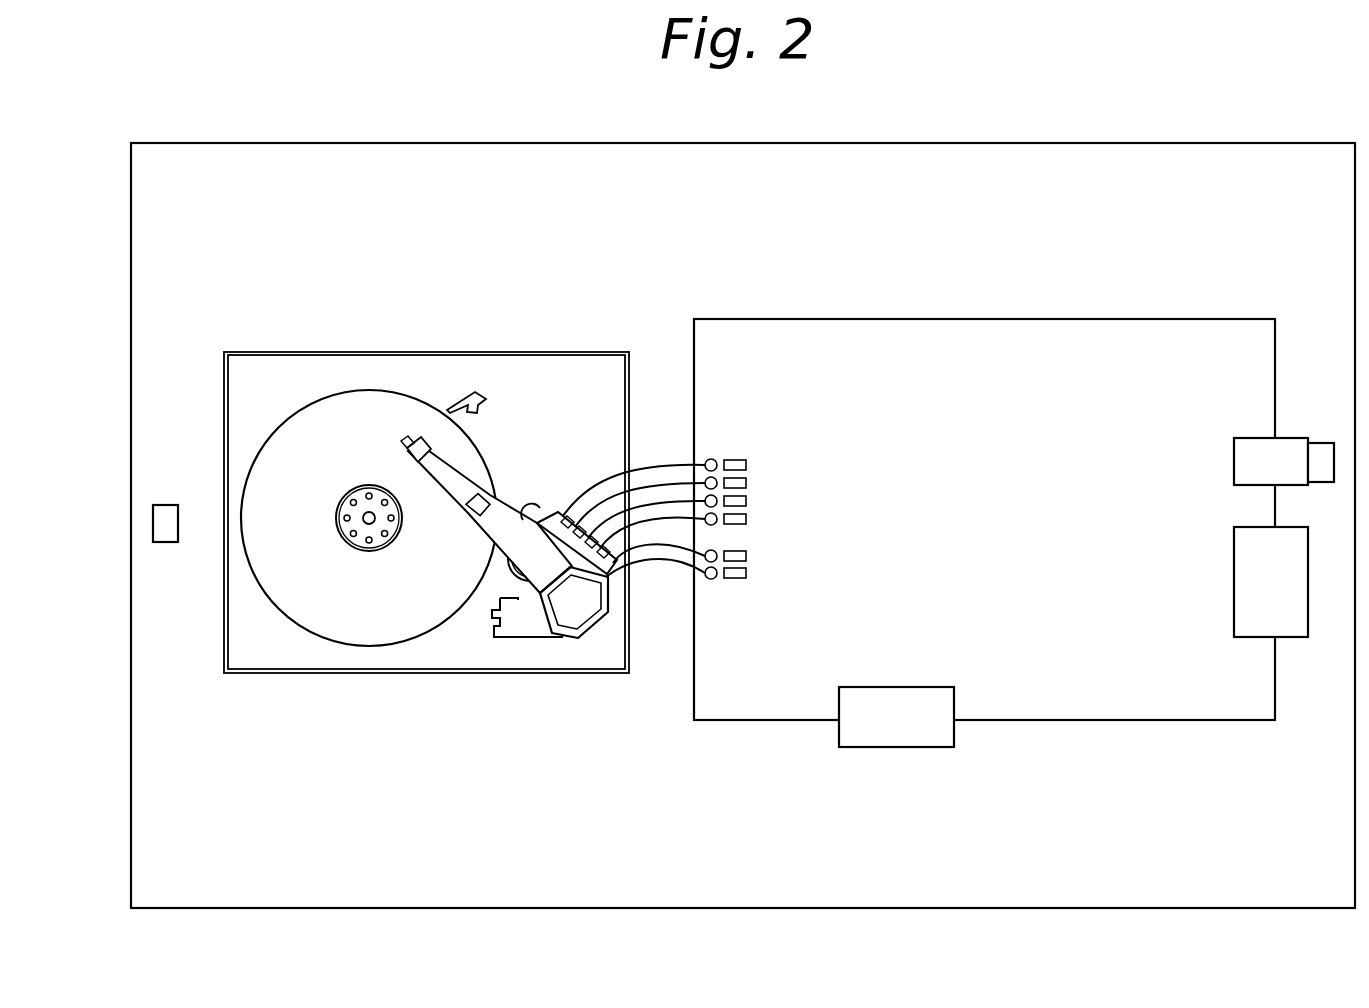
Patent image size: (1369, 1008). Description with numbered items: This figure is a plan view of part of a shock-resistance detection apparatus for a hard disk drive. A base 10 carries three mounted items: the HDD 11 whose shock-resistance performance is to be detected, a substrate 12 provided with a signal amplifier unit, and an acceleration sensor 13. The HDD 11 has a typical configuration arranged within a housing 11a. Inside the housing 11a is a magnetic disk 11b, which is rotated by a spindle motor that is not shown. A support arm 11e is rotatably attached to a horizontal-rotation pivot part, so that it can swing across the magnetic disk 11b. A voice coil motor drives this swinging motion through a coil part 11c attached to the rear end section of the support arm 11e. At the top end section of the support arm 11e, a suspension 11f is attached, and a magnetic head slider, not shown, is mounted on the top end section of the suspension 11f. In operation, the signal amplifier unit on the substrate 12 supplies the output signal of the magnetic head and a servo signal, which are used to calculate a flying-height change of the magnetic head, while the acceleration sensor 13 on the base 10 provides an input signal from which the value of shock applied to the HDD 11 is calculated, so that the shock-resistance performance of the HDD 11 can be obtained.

The base 10 is at (1160, 160).
The HDD 11 is at (548, 370).
The housing 11a is at (414, 352).
The magnetic disk 11b is at (320, 435).
The coil part 11c is at (585, 620).
The support arm 11e is at (500, 513).
The suspension 11f is at (450, 483).
The substrate with a signal amplifier unit 12 is at (1103, 320).
The acceleration sensor 13 is at (165, 518).